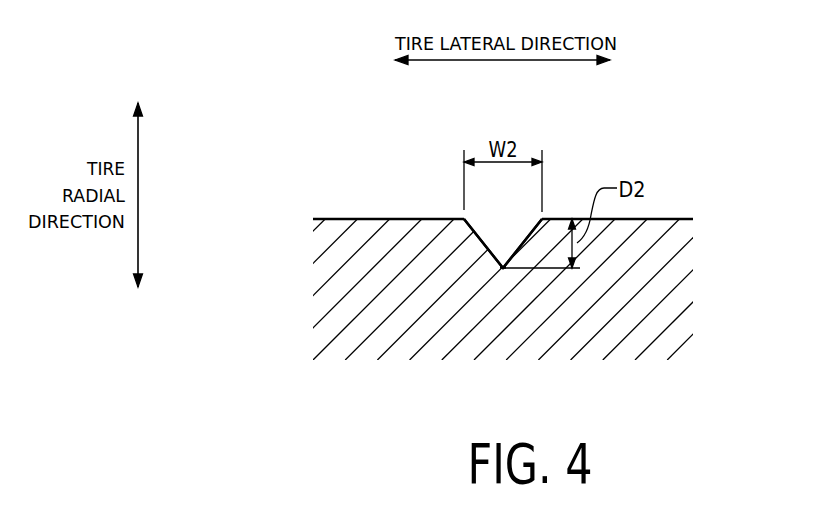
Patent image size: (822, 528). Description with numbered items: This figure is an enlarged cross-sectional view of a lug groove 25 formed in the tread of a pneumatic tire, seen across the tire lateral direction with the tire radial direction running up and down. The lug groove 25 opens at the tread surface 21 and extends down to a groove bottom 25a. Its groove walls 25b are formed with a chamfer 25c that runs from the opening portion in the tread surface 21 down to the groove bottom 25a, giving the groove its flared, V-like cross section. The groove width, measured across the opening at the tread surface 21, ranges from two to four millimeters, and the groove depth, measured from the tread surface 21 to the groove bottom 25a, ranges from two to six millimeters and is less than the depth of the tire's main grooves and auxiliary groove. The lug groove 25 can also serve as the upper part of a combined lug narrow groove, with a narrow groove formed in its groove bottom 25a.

The tread surface 21 is at (660, 219).
The lug groove 25 is at (498, 228).
The groove bottom 25a is at (503, 268).
The groove walls 25b is at (531, 232).
The chamfer 25c is at (481, 240).